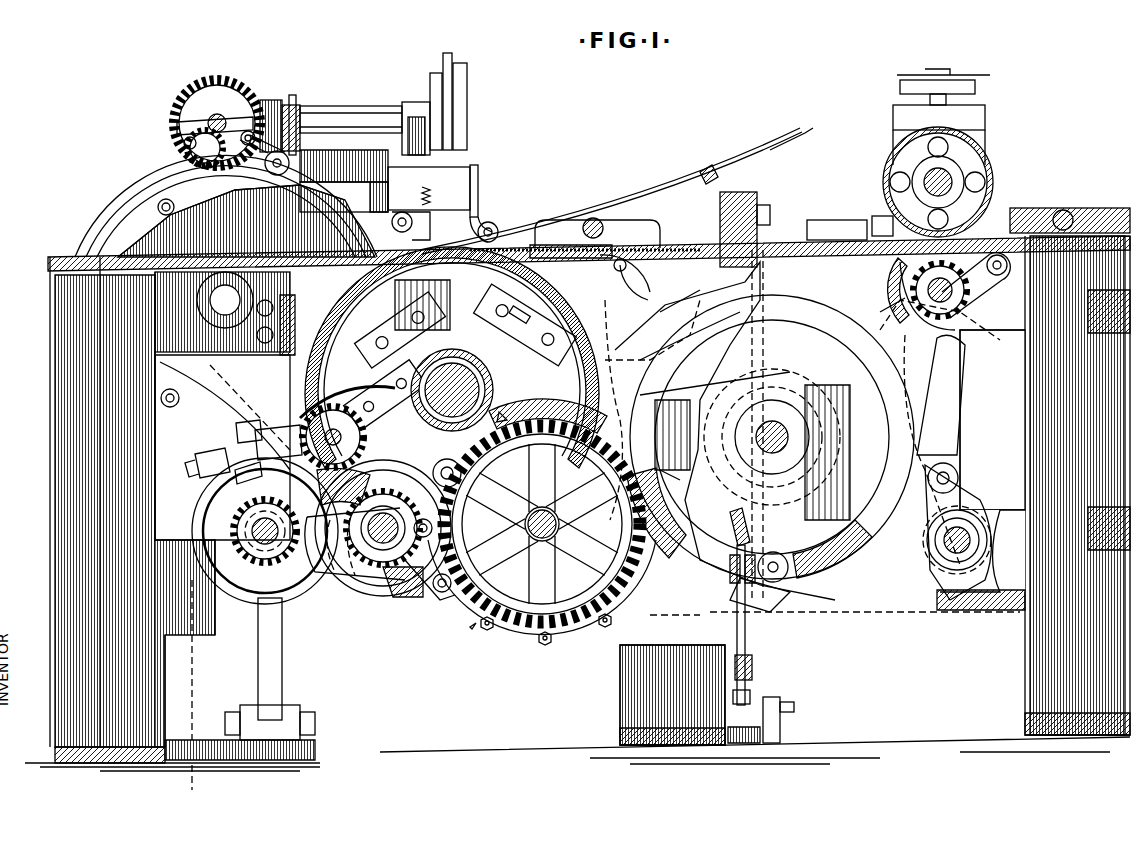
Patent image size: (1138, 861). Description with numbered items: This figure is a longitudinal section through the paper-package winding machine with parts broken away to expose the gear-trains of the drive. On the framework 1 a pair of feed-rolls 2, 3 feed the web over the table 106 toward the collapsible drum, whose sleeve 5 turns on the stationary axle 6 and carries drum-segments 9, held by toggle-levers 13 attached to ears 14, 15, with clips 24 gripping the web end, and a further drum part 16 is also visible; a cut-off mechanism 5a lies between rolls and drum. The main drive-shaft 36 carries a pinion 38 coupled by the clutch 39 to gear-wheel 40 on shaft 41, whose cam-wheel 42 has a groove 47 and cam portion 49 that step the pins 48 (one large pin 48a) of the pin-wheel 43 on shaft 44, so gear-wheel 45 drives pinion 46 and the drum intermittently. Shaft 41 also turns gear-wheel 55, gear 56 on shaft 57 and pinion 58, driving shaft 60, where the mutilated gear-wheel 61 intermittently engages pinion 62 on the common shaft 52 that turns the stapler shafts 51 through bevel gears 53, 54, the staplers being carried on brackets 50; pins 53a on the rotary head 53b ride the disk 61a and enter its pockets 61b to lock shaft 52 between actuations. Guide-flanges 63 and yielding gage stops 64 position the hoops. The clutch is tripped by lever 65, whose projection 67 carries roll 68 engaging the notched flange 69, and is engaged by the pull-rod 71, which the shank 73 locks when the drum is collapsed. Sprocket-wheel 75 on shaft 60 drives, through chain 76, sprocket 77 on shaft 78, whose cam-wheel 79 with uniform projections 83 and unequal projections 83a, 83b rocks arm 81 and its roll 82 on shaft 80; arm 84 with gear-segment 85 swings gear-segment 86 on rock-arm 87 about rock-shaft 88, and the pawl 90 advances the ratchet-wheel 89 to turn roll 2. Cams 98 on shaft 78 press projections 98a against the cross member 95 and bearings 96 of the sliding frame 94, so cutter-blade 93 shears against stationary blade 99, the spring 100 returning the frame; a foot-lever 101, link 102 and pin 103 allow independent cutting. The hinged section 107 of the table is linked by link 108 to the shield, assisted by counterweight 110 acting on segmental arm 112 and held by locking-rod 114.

The framework 1 is at (62, 410).
The feed-roll 2 is at (900, 290).
The feed-roll 3 is at (888, 165).
The sleeve or tubular shaft 5 is at (440, 410).
The cut-off mechanism 5a is at (775, 190).
The stationary shaft or axle 6 is at (462, 414).
The drum-segments 9 is at (490, 240).
The toggle-levers 13 is at (495, 350).
The ear 14 is at (540, 258).
The ear 15 is at (520, 350).
The slide 16 is at (382, 360).
The clips 24 is at (480, 212).
The main drive-shaft 36 is at (258, 568).
The pinion 38 is at (262, 590).
The clutch 39 is at (205, 516).
The gear-wheel 40 is at (325, 590).
The shaft 41 is at (382, 565).
The cam-wheel 42 is at (400, 596).
The pin-wheel 43 is at (482, 636).
The shaft 44 is at (556, 534).
The gear-wheel 45 is at (528, 618).
The pinion 46 is at (508, 418).
The groove 47 is at (378, 545).
The pins 48 is at (442, 594).
The large pin 48a is at (440, 466).
The cam portion 49 is at (430, 592).
The bracket 50 is at (415, 112).
The revoluble shaft 51 is at (332, 118).
The common driven shaft 52 is at (212, 114).
The bevel gear-wheel 53 is at (217, 72).
The pins 53a is at (190, 145).
The rotary head 53b is at (180, 126).
The bevel gear-wheel 54 is at (272, 100).
The gear-wheel 55 is at (352, 572).
The gear 56 is at (352, 440).
The shaft 57 is at (340, 432).
The pinion 58 is at (258, 458).
The shaft 60 is at (222, 300).
The mutilated gear-wheel 61 is at (188, 158).
The rotary head or disk 61a is at (128, 182).
The pockets 61b is at (293, 118).
The pinion 62 is at (196, 136).
The guide-flanges 63 is at (490, 222).
The yielding gage stops 64 is at (440, 200).
The lever or rock-arm 65 is at (262, 672).
The upward projection 67 is at (236, 440).
The antifriction-roll 68 is at (240, 415).
The flange 69 is at (300, 400).
The pull-rod 71 is at (195, 458).
The shank 73 is at (236, 478).
The sprocket-wheel 75 is at (108, 242).
The chain 76 is at (604, 380).
The sprocket-wheel 77 is at (830, 432).
The shaft 78 is at (778, 430).
The cam-wheel 79 is at (815, 318).
The shaft 80 is at (962, 538).
The rock-arm 81 is at (948, 492).
The antifriction-roll 82 is at (965, 466).
The projections 83 is at (872, 540).
The projection 83a is at (740, 452).
The projection 83b is at (620, 360).
The arm 84 is at (928, 410).
The gear-segment 85 is at (940, 318).
The gear-segment 86 is at (932, 262).
The rock-arm 87 is at (950, 280).
The rock-shaft 88 is at (955, 210).
The ratchet-wheel 89 is at (1000, 274).
The spring-actuated pawl 90 is at (1002, 254).
The cutter-blade 93 is at (772, 212).
The vertically-sliding frame 94 is at (738, 195).
The cross member 95 is at (775, 556).
The bearings 96 is at (764, 606).
The cams 98 is at (852, 502).
The projections 98a is at (722, 371).
The stationary blade 99 is at (742, 210).
The spring 100 is at (734, 520).
The foot-lever 101 is at (752, 694).
The link 102 is at (755, 662).
The pin 103 is at (750, 550).
The table 106 is at (828, 222).
The hinged section 107 is at (612, 245).
The link 108 is at (628, 262).
The counterweight 110 is at (835, 625).
The segmental arm 112 is at (640, 292).
The locking-rod 114 is at (580, 246).